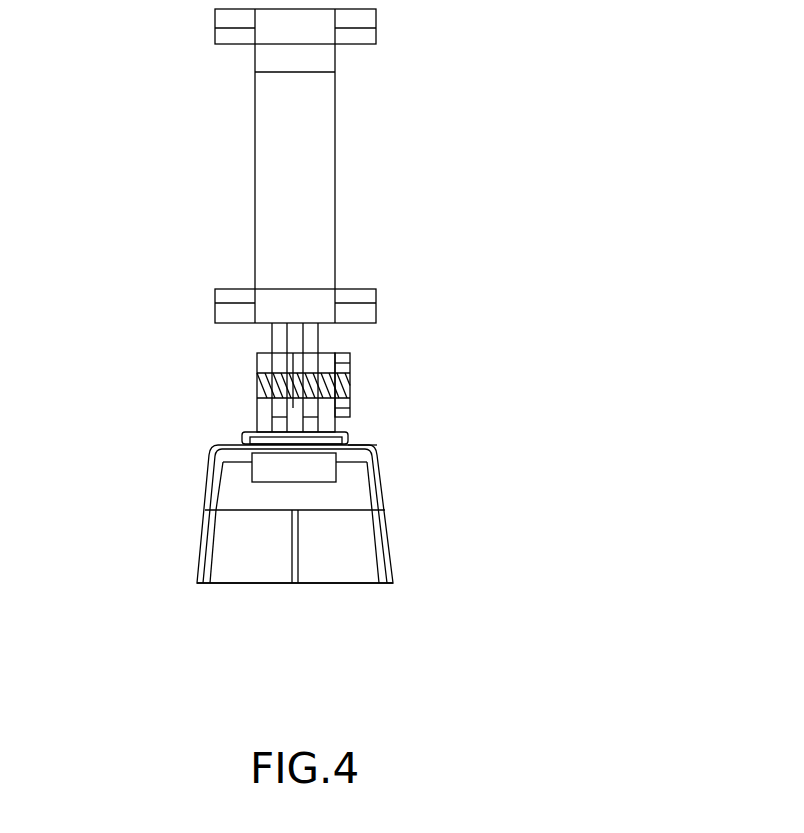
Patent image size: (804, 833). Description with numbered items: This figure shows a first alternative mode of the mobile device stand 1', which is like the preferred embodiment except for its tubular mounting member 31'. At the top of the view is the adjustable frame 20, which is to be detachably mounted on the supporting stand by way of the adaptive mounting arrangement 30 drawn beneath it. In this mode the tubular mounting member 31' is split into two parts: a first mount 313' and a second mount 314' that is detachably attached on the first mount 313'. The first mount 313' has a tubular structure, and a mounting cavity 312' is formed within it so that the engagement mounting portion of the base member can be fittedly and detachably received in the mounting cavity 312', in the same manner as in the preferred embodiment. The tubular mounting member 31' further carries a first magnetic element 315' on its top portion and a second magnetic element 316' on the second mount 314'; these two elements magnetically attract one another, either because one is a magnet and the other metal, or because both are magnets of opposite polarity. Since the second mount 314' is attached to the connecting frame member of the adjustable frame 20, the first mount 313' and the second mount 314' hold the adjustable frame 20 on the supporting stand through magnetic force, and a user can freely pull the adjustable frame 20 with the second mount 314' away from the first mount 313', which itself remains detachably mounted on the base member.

The adjustable frame 20 is at (440, 36).
The adaptive mounting arrangement 30 is at (450, 394).
The tubular mounting member 31' is at (392, 510).
The first magnetic element 315' is at (469, 351).
The second mount 314' is at (188, 413).
The mounting cavity 312' is at (391, 506).
The first mount 313' is at (211, 522).
The second magnetic element 316' is at (230, 558).
The mobile device stand 1' is at (389, 626).